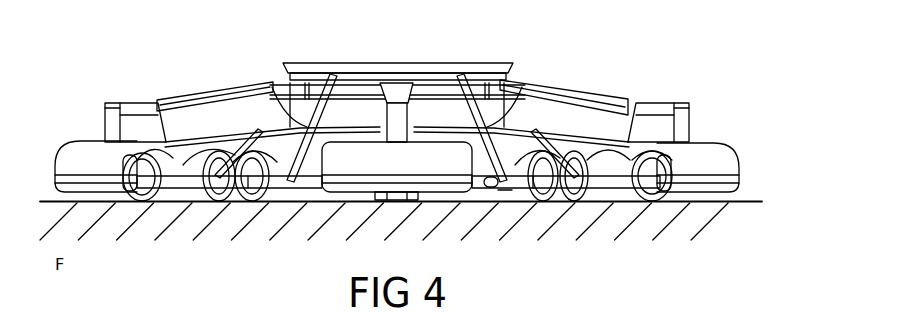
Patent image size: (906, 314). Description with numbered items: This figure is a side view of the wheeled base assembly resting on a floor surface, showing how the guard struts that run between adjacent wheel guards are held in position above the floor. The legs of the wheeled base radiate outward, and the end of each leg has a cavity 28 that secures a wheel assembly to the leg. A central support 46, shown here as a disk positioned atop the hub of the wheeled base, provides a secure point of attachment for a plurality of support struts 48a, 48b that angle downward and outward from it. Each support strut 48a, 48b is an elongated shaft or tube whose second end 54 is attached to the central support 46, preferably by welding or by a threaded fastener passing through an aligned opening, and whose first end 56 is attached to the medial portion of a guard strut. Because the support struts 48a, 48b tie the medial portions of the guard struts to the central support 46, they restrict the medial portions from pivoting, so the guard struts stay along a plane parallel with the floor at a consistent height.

The cavity 28 is at (710, 150).
The central support 46 is at (398, 63).
The support strut 48a is at (480, 115).
The support strut 48b is at (313, 118).
The second end 54 is at (316, 66).
The first end 56 is at (496, 176).